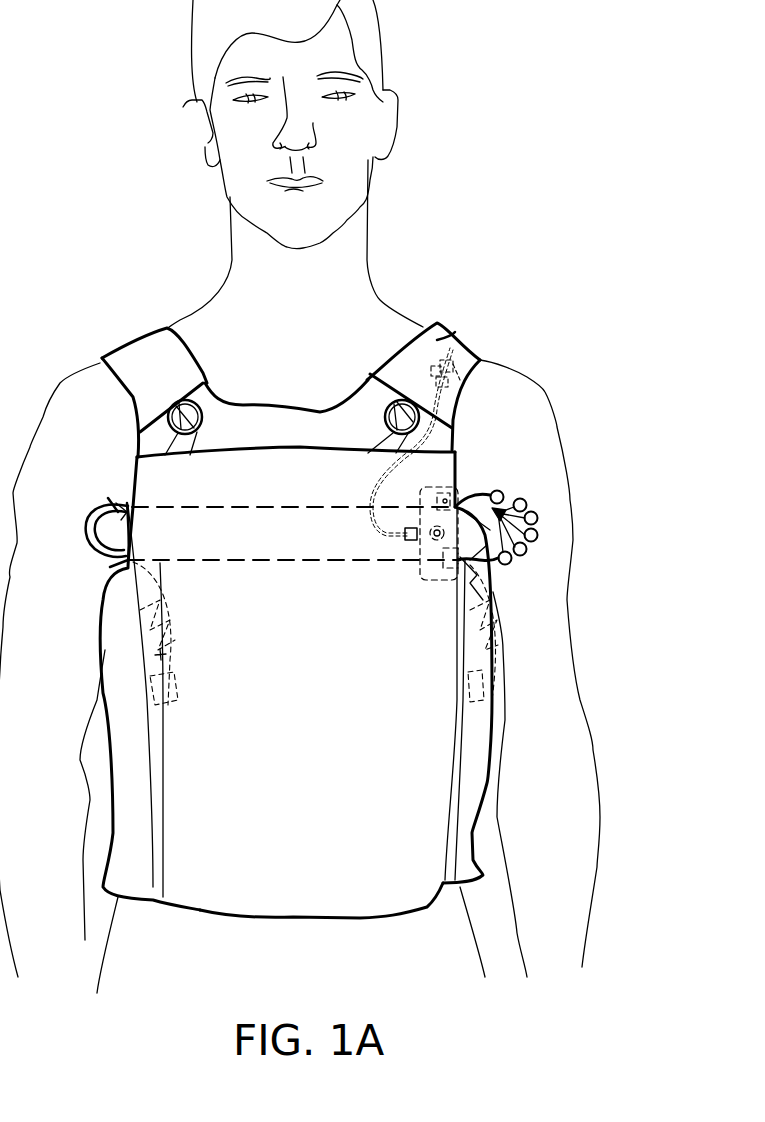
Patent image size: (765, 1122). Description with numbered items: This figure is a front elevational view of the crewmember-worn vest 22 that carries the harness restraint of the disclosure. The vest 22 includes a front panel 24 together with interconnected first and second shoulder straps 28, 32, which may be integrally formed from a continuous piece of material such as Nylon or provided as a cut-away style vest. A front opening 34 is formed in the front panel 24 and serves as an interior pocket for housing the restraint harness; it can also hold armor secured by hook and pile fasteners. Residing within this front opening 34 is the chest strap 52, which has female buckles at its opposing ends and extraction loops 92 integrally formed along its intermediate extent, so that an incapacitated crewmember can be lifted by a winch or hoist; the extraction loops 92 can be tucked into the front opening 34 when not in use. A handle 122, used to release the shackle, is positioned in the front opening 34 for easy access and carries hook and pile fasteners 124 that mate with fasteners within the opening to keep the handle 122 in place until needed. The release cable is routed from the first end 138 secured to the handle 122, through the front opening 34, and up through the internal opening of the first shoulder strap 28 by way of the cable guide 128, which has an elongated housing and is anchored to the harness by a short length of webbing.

The front panel 24 is at (302, 743).
The second shoulder strap 32 is at (147, 352).
The vest 22 is at (415, 340).
The first shoulder strap 28 is at (437, 340).
The cable guide 128 is at (460, 380).
The first end of cable 138 is at (373, 527).
The hook and pile fasteners 124 is at (440, 577).
The chest strap 52 is at (233, 543).
The front opening 34 is at (507, 498).
The handle 122 is at (533, 530).
The extraction loops 92 is at (163, 653).